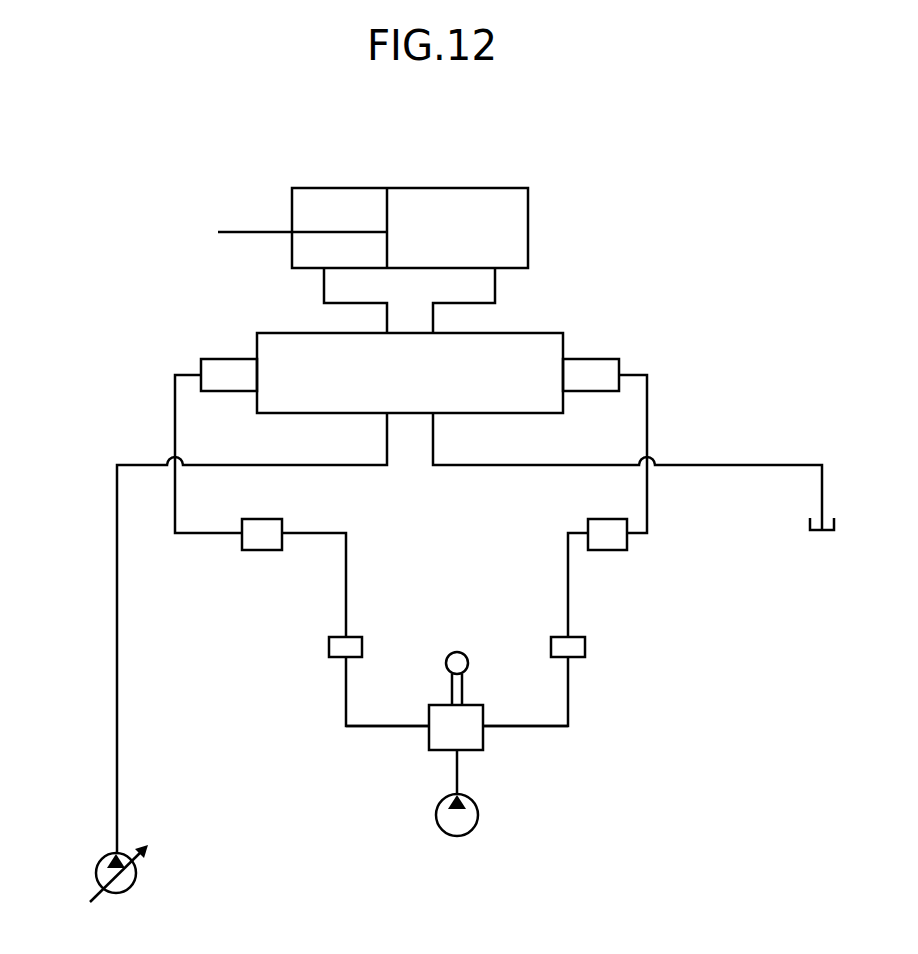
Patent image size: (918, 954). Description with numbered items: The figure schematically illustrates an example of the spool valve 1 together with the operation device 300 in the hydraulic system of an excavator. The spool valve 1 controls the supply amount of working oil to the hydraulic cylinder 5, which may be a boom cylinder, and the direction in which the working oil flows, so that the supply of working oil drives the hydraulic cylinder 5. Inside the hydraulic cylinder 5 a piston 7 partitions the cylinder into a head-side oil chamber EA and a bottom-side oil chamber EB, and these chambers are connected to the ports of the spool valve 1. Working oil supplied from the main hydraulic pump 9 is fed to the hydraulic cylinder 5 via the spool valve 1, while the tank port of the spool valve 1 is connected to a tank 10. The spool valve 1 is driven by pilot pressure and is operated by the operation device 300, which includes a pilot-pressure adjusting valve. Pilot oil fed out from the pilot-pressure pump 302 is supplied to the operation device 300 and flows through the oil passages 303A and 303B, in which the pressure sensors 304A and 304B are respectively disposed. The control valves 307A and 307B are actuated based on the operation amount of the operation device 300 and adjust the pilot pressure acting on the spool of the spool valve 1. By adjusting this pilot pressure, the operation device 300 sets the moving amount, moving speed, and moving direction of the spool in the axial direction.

The spool valve 1 is at (522, 333).
The hydraulic cylinder 5 is at (447, 189).
The piston 7 is at (387, 204).
The hydraulic pump 9 is at (96, 872).
The tank 10 is at (829, 536).
The operation device 300 is at (456, 642).
The pilot-pressure pump 302 is at (457, 838).
The oil passage 303A is at (546, 728).
The oil passage 303B is at (371, 728).
The pressure sensor 304A is at (585, 647).
The pressure sensor 304B is at (329, 648).
The control valve 307A is at (606, 519).
The control valve 307B is at (262, 519).